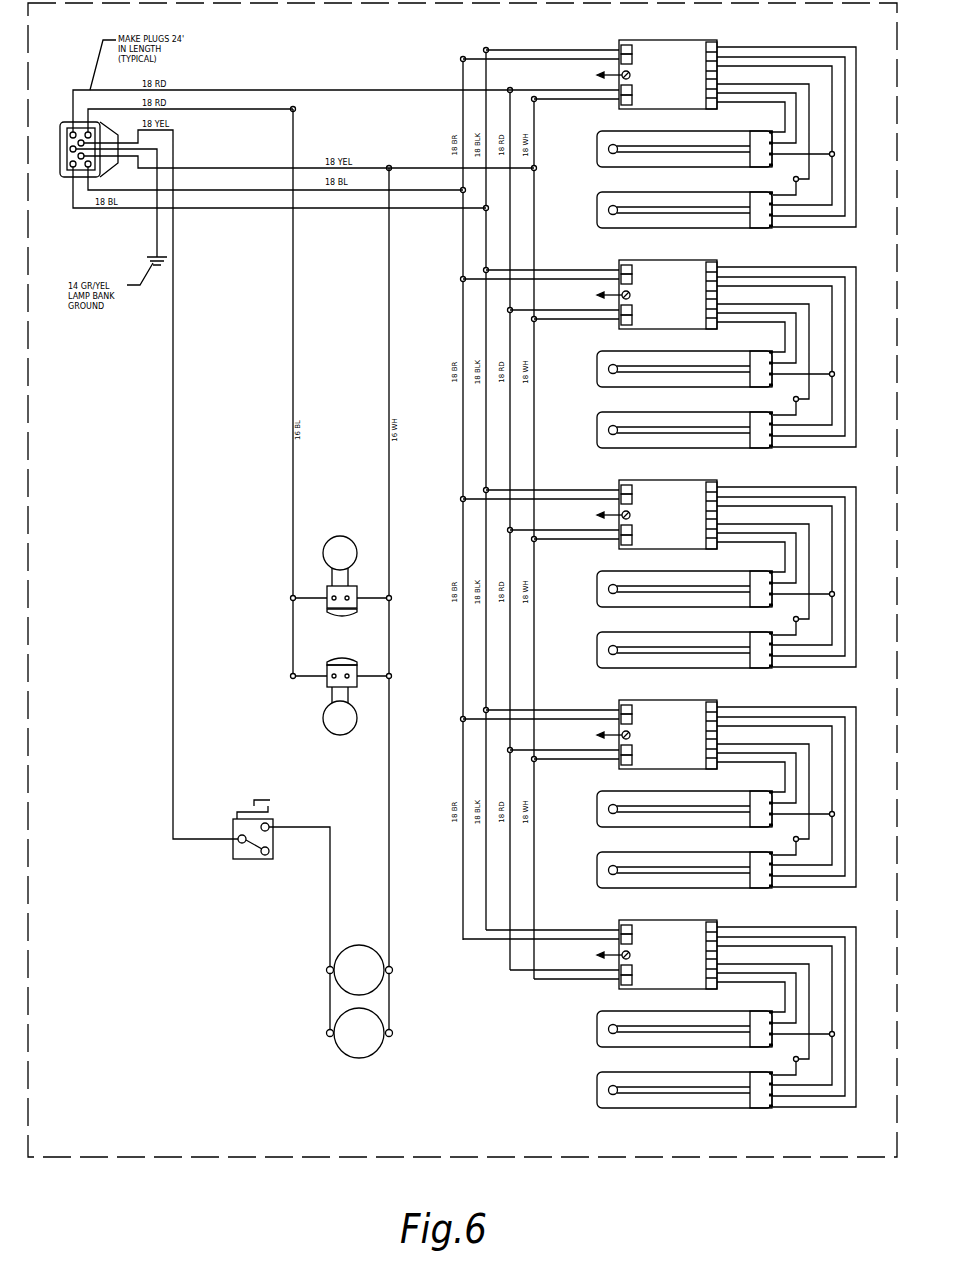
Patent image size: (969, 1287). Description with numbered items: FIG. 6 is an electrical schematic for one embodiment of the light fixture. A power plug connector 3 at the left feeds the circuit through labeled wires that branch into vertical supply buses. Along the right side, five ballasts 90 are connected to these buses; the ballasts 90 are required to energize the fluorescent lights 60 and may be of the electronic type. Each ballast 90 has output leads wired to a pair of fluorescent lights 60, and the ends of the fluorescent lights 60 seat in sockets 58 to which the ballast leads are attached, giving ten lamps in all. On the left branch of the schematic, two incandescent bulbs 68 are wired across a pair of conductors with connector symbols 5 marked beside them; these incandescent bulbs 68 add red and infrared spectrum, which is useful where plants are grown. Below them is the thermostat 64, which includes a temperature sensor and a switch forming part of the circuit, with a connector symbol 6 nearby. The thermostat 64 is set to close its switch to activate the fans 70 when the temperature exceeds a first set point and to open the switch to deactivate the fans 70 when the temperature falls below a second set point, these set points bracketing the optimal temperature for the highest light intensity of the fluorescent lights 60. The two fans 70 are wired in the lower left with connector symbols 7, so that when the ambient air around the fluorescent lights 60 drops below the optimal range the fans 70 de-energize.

The power plug connector 3 is at (68, 151).
The lamp socket connector 5 is at (341, 635).
The switch connector 6 is at (299, 913).
The fan connector 7 is at (360, 1002).
The socket 58 is at (758, 143).
The fluorescent bulb 60 is at (602, 147).
The thermostat 64 is at (240, 855).
The incandescent bulb 68 is at (337, 548).
The fan 70 is at (347, 958).
The ballast 90 is at (643, 58).